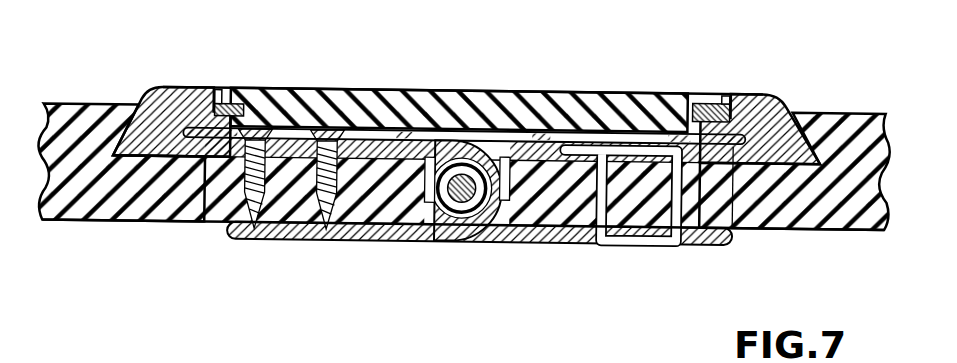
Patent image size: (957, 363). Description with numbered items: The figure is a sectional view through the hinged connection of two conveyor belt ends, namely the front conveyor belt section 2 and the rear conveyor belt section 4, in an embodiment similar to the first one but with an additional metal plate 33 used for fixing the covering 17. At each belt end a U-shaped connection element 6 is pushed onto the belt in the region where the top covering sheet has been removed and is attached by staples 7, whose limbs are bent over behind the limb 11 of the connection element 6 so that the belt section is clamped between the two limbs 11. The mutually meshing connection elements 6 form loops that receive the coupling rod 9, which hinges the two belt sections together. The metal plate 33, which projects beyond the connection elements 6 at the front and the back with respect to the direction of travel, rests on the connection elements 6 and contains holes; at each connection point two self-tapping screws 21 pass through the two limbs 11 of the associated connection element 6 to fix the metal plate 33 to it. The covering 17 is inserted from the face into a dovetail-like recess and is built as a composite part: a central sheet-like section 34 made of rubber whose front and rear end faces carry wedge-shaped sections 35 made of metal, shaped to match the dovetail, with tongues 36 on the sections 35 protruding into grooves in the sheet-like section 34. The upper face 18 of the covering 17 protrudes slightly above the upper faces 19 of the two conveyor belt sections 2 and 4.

The front conveyor belt section 2 is at (698, 273).
The rear conveyor belt section 4 is at (133, 256).
The connection element 6 is at (362, 240).
The staple 7 is at (633, 257).
The coupling rod 9 is at (441, 240).
The limb 11 is at (297, 128).
The covering 17 is at (663, 72).
The upper face of the covering 18 is at (432, 89).
The upper face of the conveyor belt section 19 is at (85, 102).
The screw 21 is at (192, 221).
The metal plate 33 is at (733, 228).
The sheet-like section 34 is at (497, 107).
The wedge-shaped section 35 is at (164, 104).
The tongue 36 is at (230, 110).